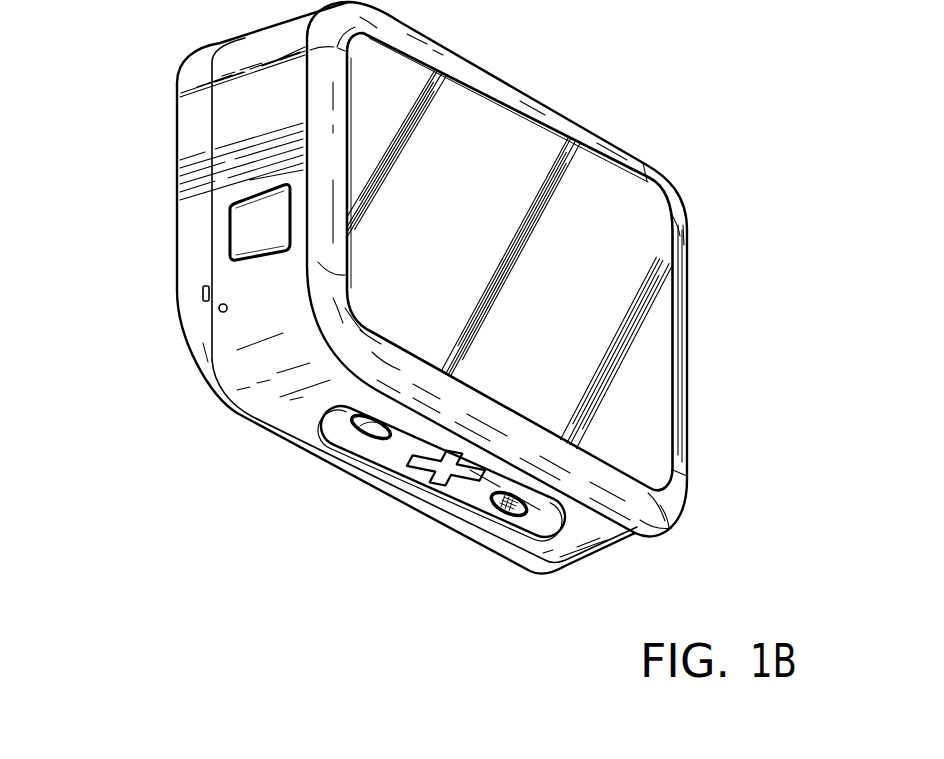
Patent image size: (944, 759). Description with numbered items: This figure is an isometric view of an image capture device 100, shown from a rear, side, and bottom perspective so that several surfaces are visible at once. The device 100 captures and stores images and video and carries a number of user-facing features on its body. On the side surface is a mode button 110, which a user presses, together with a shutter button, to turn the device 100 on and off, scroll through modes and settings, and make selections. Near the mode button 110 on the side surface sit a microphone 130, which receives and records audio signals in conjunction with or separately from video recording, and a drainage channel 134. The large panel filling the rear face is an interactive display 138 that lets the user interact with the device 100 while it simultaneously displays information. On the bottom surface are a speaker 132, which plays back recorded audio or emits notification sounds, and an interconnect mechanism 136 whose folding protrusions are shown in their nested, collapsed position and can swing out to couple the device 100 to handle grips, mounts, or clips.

The image capture device 100 is at (674, 82).
The mode button 110 is at (243, 231).
The microphone 130 is at (219, 311).
The speaker 132 is at (505, 513).
The drainage channel 134 is at (196, 293).
The interconnect mechanism 136 is at (370, 447).
The interactive display 138 is at (645, 381).